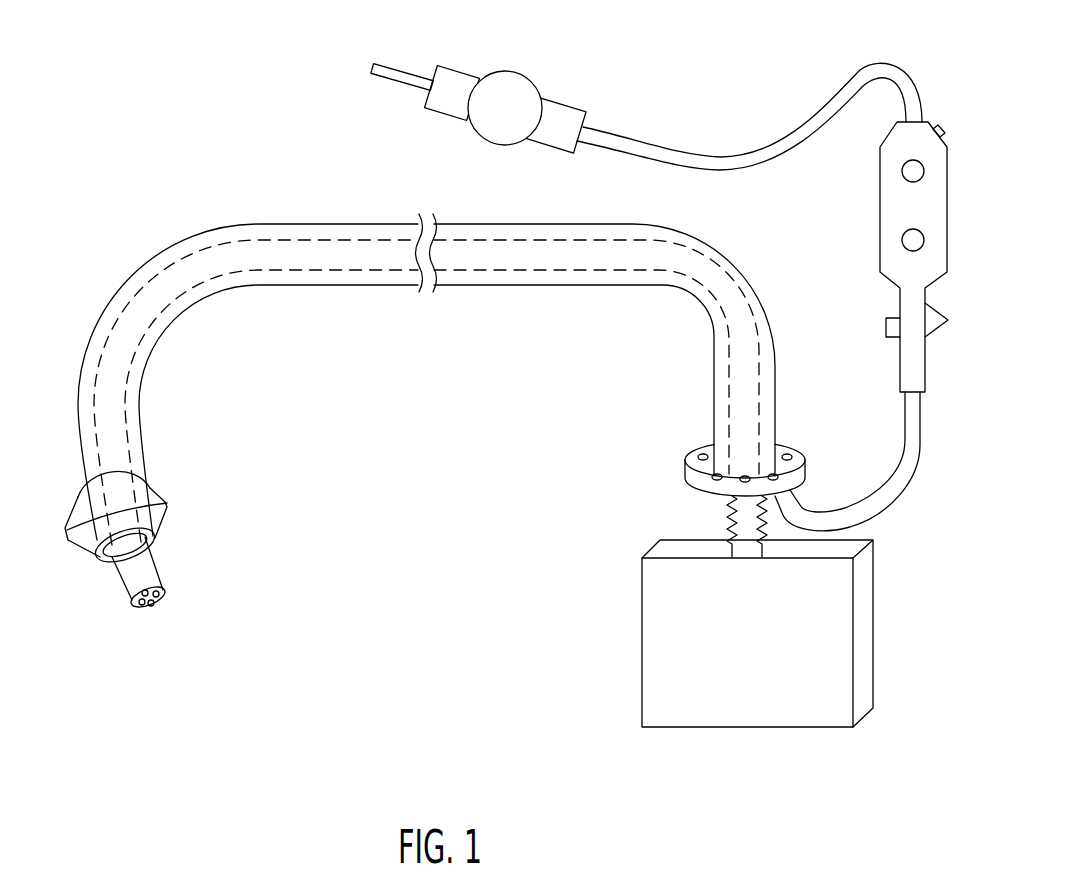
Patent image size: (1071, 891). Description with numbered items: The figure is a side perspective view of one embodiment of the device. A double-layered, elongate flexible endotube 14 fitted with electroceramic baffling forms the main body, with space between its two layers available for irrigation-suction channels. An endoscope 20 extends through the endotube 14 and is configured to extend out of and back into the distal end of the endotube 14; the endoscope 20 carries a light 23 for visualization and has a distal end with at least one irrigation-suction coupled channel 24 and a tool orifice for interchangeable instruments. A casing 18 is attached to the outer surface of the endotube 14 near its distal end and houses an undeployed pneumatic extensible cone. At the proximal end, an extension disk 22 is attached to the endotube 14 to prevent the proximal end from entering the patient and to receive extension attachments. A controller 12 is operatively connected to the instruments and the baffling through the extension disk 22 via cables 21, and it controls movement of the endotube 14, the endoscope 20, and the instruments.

The controller 12 is at (642, 645).
The endotube 14 is at (205, 246).
The casing 18 is at (78, 520).
The endoscope 20 is at (753, 135).
The cables 21 is at (720, 527).
The extension disk 22 is at (693, 452).
The light 23 is at (503, 70).
The irrigation-suction coupled channel 24 is at (132, 590).